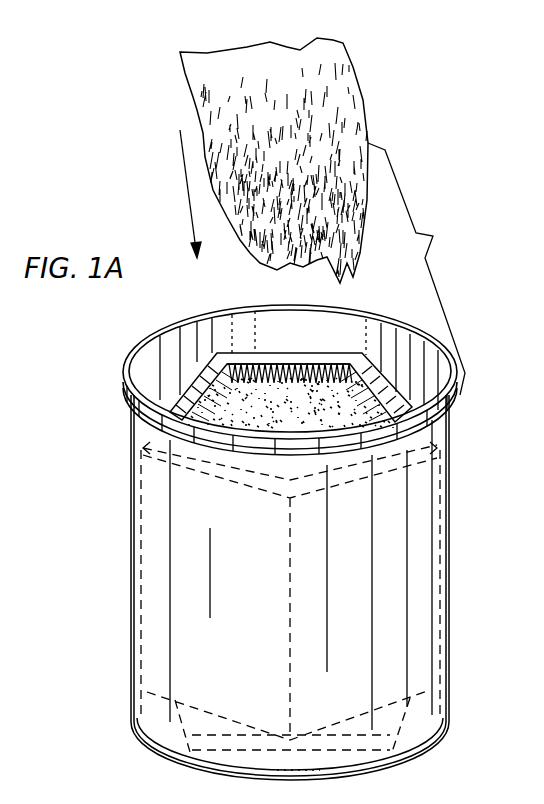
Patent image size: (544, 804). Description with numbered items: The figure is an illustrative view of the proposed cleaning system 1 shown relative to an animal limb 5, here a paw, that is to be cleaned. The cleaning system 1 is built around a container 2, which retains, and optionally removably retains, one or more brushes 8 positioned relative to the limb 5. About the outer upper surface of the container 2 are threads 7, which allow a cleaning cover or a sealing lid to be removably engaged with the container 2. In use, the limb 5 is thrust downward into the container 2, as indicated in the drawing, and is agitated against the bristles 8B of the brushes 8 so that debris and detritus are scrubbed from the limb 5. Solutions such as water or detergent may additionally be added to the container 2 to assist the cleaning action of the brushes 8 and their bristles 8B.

The cleaning system 1 is at (429, 134).
The container 2 is at (449, 497).
The animal limb 5 is at (340, 67).
The threads 7 is at (468, 399).
The brushes 8 is at (172, 585).
The bristles 8B is at (360, 350).